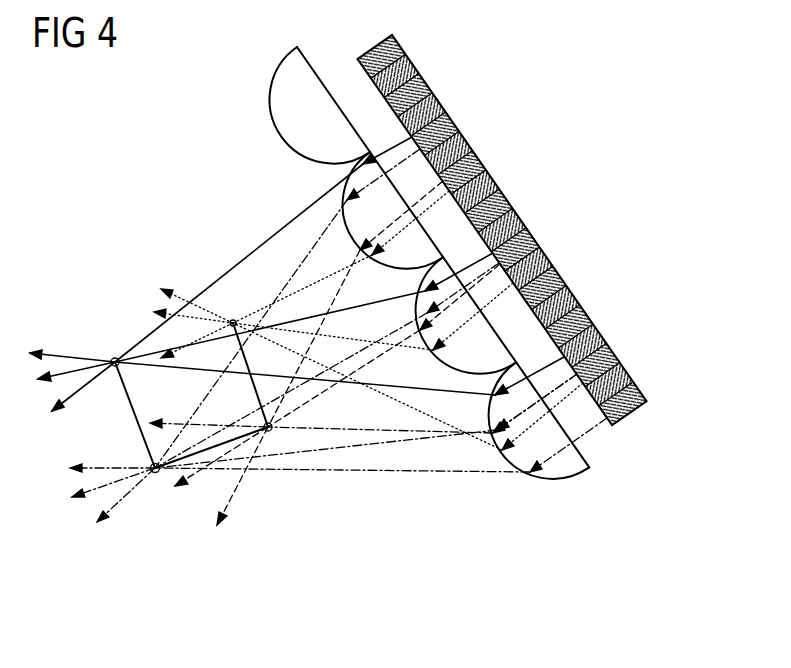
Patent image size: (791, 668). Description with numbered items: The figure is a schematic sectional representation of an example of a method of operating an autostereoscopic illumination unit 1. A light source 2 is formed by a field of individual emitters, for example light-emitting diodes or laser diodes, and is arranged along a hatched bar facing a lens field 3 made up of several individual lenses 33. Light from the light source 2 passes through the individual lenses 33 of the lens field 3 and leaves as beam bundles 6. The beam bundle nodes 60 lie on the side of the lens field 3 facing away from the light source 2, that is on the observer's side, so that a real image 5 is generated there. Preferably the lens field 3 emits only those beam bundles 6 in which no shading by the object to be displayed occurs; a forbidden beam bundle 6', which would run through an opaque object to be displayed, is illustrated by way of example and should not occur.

The optical sensor arrangement 1 is at (645, 512).
The light source 2 is at (630, 418).
The lens field 3 is at (411, 293).
The individual lens 33 is at (578, 466).
The real image 5 is at (128, 404).
The beam bundle 6 is at (297, 274).
The forbidden beam bundle 6' is at (363, 448).
The beam bundle node 60 is at (112, 355).